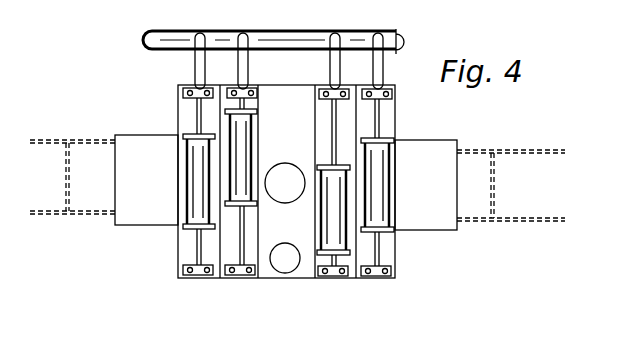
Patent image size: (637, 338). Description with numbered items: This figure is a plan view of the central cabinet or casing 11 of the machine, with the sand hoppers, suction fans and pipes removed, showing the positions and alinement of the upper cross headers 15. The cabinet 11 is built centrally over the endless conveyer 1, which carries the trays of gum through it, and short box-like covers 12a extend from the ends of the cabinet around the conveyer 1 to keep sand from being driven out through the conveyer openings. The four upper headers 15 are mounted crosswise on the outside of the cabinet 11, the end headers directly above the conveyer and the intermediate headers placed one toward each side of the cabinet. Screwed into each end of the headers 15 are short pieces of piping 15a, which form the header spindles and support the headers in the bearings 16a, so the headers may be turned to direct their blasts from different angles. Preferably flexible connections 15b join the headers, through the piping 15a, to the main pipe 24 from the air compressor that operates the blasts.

The main pipe 24 is at (282, 44).
The connections 15b is at (200, 68).
The bearings 16a is at (183, 90).
The short pieces of piping 15a is at (200, 115).
The headers 15 is at (238, 196).
The short box-like covers 12a is at (286, 182).
The cabinet or casing 11 is at (286, 181).
The endless conveyer 1 is at (297, 180).